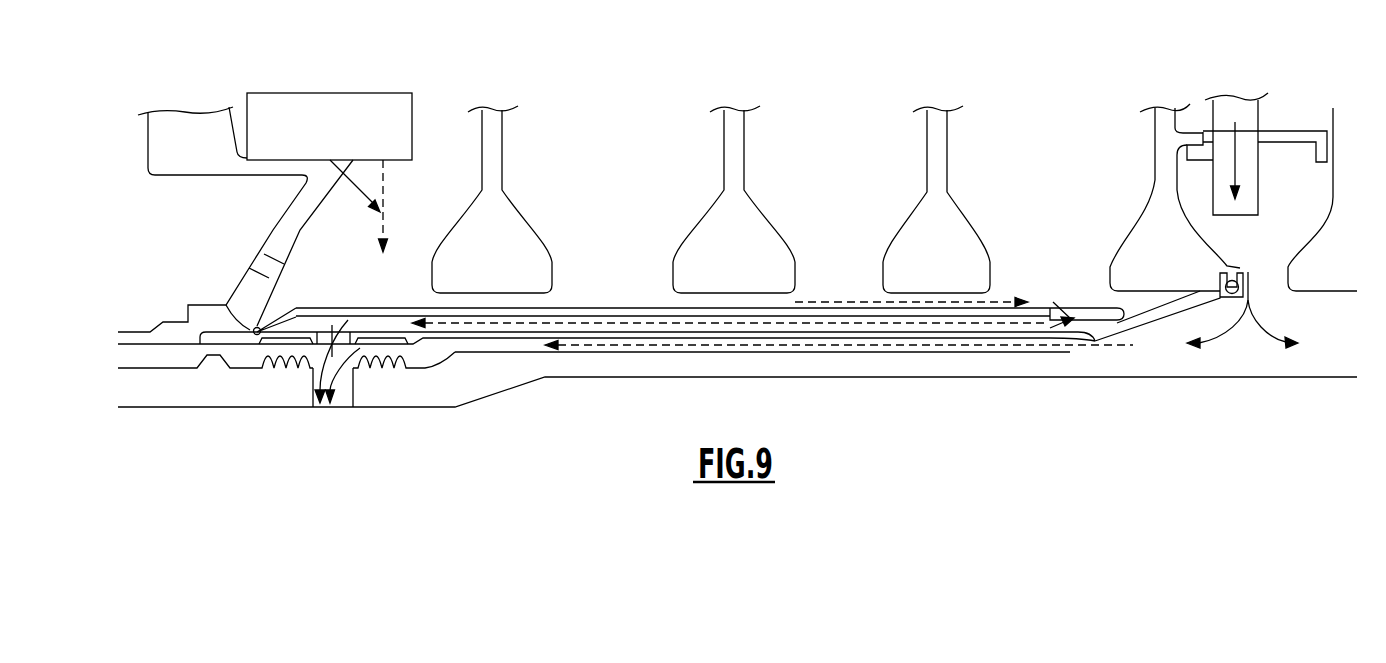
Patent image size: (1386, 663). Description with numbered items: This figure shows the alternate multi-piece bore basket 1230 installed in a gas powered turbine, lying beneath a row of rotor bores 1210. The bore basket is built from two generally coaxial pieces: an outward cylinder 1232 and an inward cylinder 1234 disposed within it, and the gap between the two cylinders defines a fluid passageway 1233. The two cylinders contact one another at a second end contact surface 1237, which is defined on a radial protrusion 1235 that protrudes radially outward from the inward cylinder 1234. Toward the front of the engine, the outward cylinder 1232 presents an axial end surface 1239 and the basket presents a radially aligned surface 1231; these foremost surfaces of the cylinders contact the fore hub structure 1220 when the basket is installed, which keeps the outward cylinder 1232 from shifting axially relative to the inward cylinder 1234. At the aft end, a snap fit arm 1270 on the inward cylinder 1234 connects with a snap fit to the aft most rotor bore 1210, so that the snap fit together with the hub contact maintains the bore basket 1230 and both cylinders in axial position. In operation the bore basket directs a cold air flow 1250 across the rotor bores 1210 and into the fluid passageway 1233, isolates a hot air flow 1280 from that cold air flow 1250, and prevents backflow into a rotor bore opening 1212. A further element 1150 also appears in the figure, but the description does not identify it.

The cooling air flow 1150 is at (1003, 302).
The rotor bores 1210 is at (498, 183).
The rotor bore opening 1212 is at (870, 120).
The fore hub structure 1220 is at (298, 223).
The multi-piece bore basket 1230 is at (605, 310).
The radially aligned surface 1231 is at (190, 332).
The outward cylinder 1232 is at (555, 312).
The fluid passageway 1233 is at (807, 330).
The inward cylinder 1234 is at (676, 340).
The radial protrusion 1235 is at (260, 345).
The second end contact surface 1237 is at (263, 322).
The axial end surface 1239 is at (252, 326).
The cold air flow 1250 is at (388, 200).
The snap fit arm 1270 is at (1240, 272).
The hot air flow 1280 is at (1275, 328).